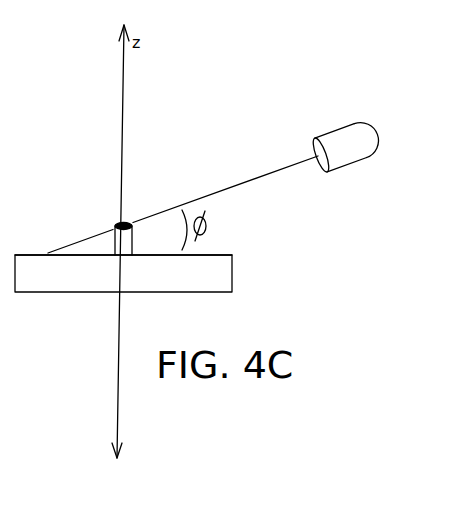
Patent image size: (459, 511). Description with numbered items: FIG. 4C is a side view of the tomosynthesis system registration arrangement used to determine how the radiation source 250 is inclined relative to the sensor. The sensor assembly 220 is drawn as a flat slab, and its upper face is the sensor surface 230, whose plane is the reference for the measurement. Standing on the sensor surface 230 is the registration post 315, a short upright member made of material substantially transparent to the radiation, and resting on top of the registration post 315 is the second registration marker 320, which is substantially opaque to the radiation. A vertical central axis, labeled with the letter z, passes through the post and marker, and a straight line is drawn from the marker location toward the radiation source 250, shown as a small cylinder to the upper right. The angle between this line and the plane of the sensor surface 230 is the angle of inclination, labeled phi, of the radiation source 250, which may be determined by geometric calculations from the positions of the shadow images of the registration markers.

The sensor assembly 220 is at (228, 279).
The sensor surface 230 is at (214, 241).
The radiation source 250 is at (322, 138).
The registration post 315 is at (111, 241).
The second registration marker 320 is at (118, 222).